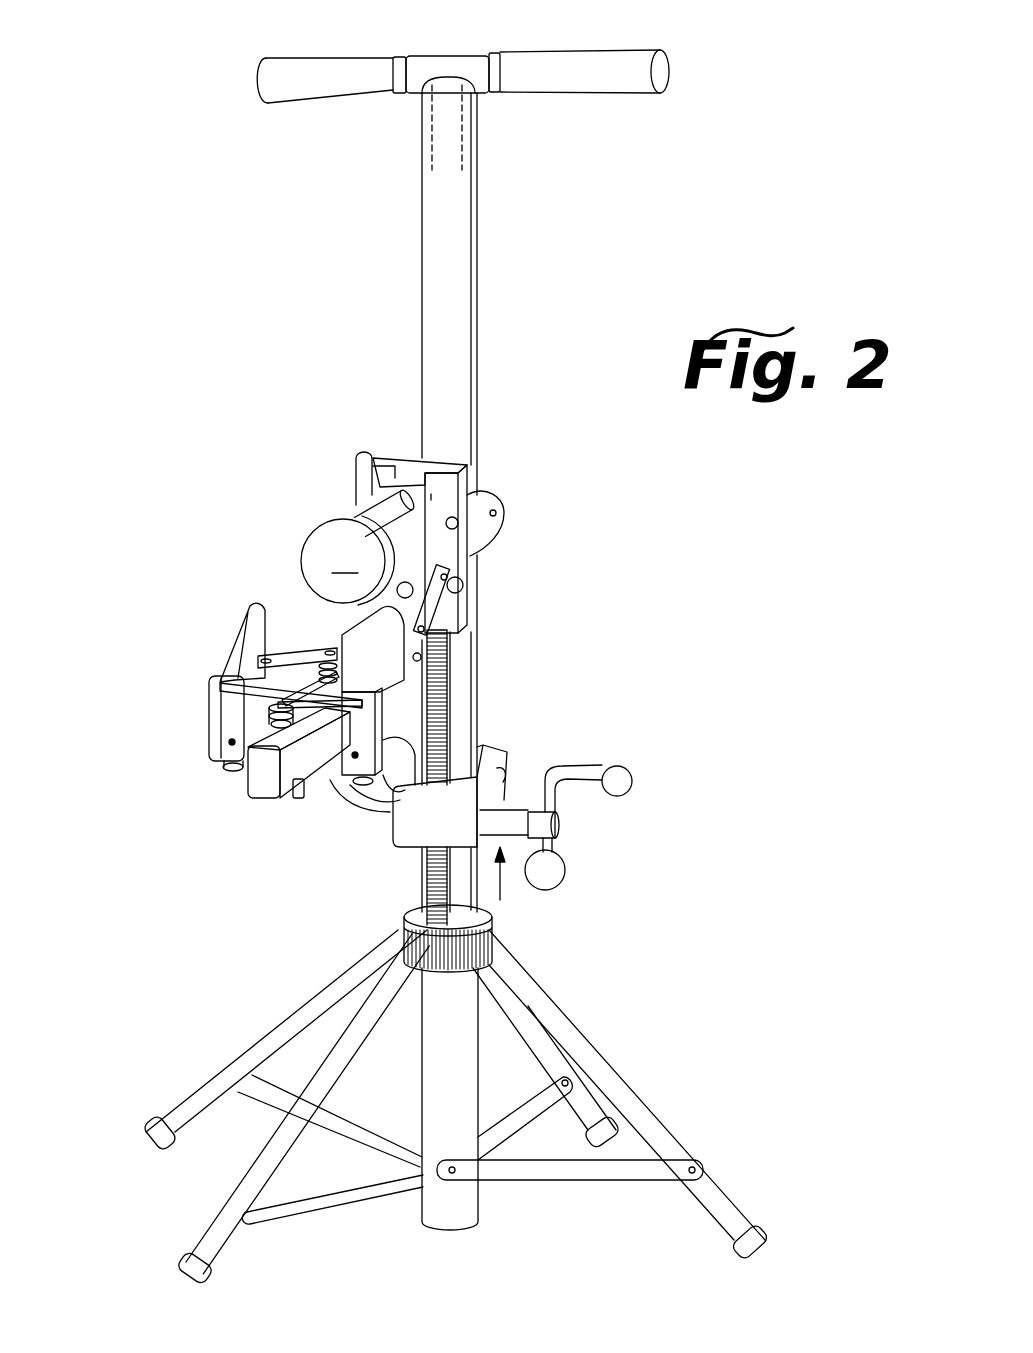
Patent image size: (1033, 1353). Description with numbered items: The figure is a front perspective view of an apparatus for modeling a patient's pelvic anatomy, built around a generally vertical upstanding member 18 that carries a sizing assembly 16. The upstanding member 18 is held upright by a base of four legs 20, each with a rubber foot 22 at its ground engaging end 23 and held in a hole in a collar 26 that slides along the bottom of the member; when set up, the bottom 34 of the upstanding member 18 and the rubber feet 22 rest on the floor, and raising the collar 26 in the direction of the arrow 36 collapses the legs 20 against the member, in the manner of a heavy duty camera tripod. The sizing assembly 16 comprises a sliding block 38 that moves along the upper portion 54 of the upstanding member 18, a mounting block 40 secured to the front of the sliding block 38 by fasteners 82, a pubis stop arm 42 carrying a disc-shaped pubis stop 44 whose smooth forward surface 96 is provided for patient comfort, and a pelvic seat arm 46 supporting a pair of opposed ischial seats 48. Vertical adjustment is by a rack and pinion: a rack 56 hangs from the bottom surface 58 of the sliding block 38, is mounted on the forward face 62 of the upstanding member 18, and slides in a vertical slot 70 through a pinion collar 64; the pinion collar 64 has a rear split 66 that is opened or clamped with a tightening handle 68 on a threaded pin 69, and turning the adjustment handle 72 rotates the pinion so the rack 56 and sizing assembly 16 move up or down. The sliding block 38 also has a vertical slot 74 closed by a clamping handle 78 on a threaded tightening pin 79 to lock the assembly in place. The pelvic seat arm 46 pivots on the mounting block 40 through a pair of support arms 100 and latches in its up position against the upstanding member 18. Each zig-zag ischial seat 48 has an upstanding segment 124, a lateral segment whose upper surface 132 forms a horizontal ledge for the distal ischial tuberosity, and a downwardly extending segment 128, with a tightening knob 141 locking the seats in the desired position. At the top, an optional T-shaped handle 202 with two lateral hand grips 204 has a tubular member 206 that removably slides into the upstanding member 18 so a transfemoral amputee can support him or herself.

The sizing assembly 16 is at (263, 707).
The upstanding member 18 is at (458, 370).
The legs 20 is at (290, 1018).
The rubber foot 22 is at (150, 1140).
The ground engaging end 23 is at (220, 1253).
The collar 26 is at (442, 967).
The bottom 34 is at (455, 1228).
The arrow 36 is at (500, 883).
The sliding block 38 is at (486, 524).
The mounting block 40 is at (447, 485).
The pubis stop arm 42 is at (390, 515).
The pubis stop 44 is at (353, 547).
The pelvic seat arm 46 is at (298, 756).
The ischial seats 48 is at (210, 687).
The upper portion 54 is at (455, 220).
The rack 56 is at (440, 712).
The bottom surface 58 is at (447, 658).
The forward face 62 is at (451, 683).
The pinion collar 64 is at (405, 835).
The split 66 is at (481, 744).
The tightening handle 68 is at (385, 815).
The threaded pin 69 is at (530, 808).
The slot 70 is at (390, 773).
The adjustment handle 72 is at (550, 872).
The slot 74 is at (470, 497).
The clamping handle 78 is at (358, 472).
The threaded tightening pin 79 is at (497, 513).
The fasteners 82 is at (452, 530).
The forward surface 96 is at (328, 533).
The support arms 100 is at (437, 603).
The upstanding segment 124 is at (257, 630).
The downwardly extending segment 128 is at (225, 742).
The upper surface 132 is at (217, 675).
The tightening knob 141 is at (292, 797).
The handle 202 is at (545, 51).
The hand grips 204 is at (287, 76).
The tubular member 206 is at (428, 148).